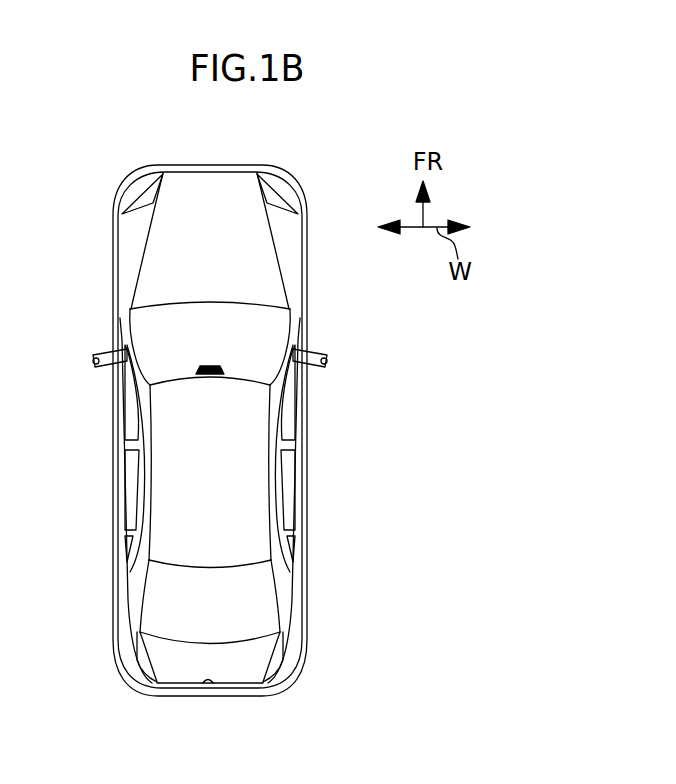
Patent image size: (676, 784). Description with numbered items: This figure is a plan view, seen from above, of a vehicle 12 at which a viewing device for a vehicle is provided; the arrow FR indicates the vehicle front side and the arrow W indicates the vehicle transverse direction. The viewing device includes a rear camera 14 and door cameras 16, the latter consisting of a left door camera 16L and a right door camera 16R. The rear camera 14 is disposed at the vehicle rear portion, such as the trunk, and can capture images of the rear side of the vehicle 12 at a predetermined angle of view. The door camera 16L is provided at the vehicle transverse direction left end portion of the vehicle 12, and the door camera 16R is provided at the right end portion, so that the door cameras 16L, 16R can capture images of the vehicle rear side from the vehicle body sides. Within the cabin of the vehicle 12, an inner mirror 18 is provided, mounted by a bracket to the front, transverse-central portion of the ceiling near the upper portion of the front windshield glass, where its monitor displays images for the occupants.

The vehicle 12 is at (258, 161).
The rear camera 14 is at (208, 688).
The door cameras 16 is at (206, 396).
The door camera 16L is at (93, 366).
The door camera 16R is at (327, 366).
The inner mirror 18 is at (213, 364).